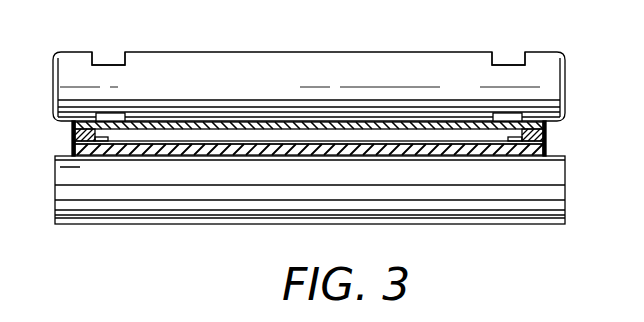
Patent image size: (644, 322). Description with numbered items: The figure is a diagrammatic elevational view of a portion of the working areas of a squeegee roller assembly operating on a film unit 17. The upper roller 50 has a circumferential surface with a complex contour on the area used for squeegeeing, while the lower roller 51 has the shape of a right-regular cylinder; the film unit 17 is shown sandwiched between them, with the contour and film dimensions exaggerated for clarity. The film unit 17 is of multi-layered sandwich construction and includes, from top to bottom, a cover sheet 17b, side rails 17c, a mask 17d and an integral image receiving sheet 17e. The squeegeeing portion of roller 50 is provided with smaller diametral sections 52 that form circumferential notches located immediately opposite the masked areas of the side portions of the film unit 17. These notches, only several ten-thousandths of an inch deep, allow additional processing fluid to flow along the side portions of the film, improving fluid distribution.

The film unit 17 is at (320, 145).
The cover sheet 17b is at (547, 126).
The side rails 17c is at (548, 133).
The mask 17d is at (548, 143).
The integral image receiving sheet 17e is at (553, 152).
The roller 50 is at (288, 28).
The roller 51 is at (450, 226).
The smaller diametral sections 52 is at (107, 63).